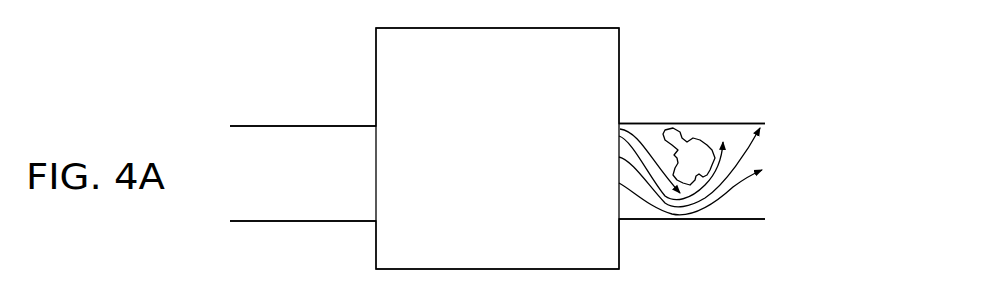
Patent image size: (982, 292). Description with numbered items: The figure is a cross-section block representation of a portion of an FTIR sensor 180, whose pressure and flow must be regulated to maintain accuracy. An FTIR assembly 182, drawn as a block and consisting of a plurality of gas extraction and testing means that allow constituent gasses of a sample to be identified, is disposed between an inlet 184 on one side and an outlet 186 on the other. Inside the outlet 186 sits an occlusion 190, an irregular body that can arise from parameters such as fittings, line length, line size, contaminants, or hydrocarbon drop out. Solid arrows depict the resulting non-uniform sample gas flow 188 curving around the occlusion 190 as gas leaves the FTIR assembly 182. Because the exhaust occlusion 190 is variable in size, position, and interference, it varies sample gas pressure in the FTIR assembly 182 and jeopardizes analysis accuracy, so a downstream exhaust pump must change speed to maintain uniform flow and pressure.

The FTIR sensor 180 is at (676, 44).
The FTIR assembly 182 is at (515, 261).
The inlet 184 is at (311, 126).
The outlet 186 is at (651, 123).
The non-uniform sample gas flow 188 is at (716, 219).
The occlusion 190 is at (700, 139).